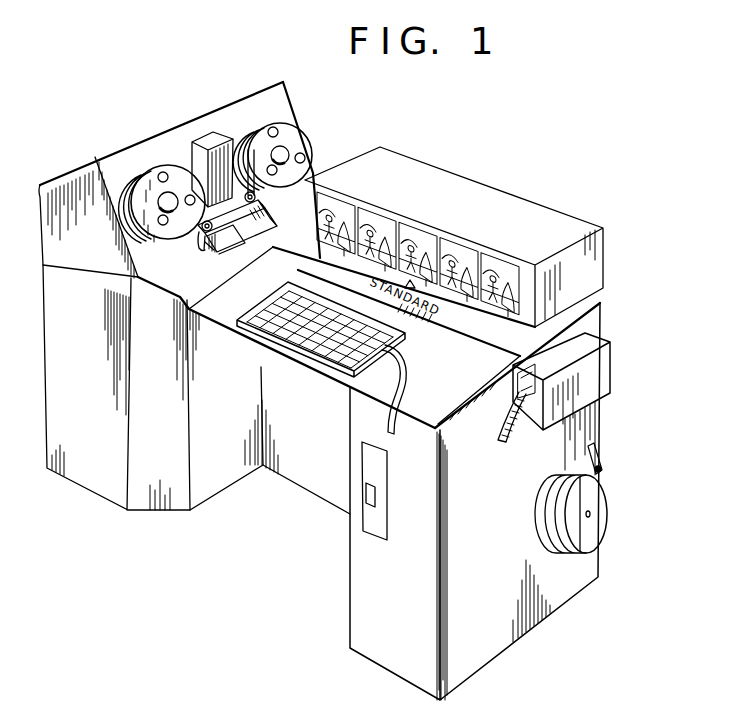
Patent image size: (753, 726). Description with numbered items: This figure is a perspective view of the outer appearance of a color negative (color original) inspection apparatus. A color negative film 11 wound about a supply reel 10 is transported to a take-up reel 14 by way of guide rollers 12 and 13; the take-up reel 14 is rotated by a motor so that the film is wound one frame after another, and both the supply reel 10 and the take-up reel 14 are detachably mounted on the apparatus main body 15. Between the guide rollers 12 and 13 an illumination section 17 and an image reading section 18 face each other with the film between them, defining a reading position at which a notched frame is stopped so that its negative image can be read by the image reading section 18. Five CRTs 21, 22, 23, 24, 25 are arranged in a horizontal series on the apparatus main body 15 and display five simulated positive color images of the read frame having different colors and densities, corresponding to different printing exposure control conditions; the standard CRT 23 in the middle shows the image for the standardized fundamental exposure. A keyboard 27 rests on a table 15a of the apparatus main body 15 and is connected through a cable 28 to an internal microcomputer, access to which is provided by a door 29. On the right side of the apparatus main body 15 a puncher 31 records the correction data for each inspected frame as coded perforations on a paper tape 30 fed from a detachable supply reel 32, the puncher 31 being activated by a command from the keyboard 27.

The supply reel 10 is at (297, 142).
The color negative film 11 is at (238, 222).
The guide roller 12 is at (273, 236).
The guide roller 13 is at (204, 240).
The take-up reel 14 is at (145, 208).
The apparatus main body 15 is at (362, 622).
The table 15a is at (470, 402).
The illumination section 17 is at (276, 224).
The image reading section 18 is at (222, 140).
The CRT 21 is at (349, 222).
The CRT 22 is at (385, 242).
The standard CRT 23 is at (421, 252).
The CRT 24 is at (469, 262).
The CRT 25 is at (511, 278).
The keyboard 27 is at (300, 345).
The cable 28 is at (403, 383).
The door 29 is at (365, 524).
The paper tape 30 is at (512, 433).
The puncher 31 is at (607, 377).
The supply reel 32 is at (607, 512).